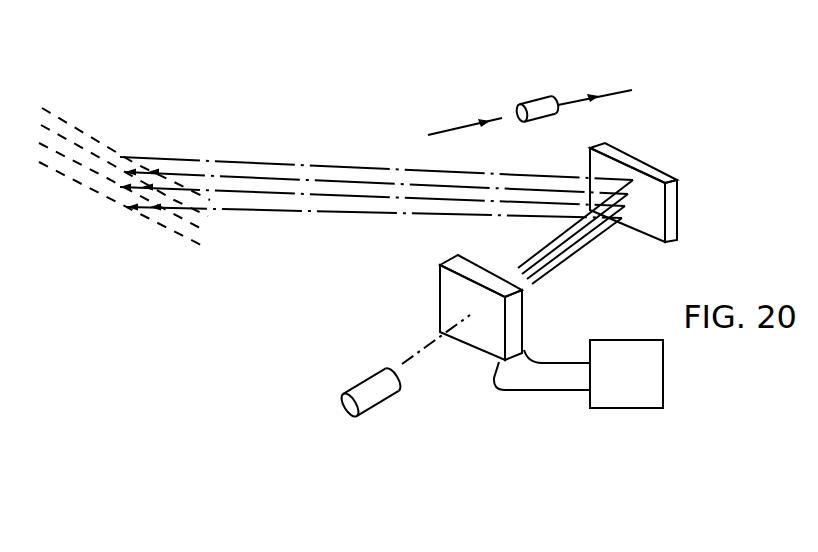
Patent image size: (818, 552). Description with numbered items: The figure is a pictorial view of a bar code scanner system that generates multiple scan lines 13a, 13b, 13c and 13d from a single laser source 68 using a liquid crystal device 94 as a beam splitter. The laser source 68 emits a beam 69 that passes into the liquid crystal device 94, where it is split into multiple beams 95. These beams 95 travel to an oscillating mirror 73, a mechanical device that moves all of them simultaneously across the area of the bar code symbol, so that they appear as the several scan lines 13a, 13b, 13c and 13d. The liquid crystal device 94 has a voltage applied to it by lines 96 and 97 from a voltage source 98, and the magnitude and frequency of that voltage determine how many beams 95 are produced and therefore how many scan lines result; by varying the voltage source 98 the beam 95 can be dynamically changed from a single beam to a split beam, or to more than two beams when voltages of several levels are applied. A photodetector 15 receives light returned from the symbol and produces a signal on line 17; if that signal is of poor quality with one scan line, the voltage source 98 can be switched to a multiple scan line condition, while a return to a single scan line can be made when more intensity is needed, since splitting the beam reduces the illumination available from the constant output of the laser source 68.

The scan line 13a is at (72, 124).
The scan line 13b is at (100, 157).
The scan line 13c is at (72, 164).
The scan line 13d is at (110, 200).
The photodetector 15 is at (543, 108).
The line 17 is at (570, 100).
The laser source 68 is at (380, 392).
The beam 69 is at (405, 362).
The oscillating mirror 73 is at (653, 172).
The liquid crystal device 94 is at (443, 295).
The beams 95 is at (614, 235).
The line 96 is at (568, 363).
The line 97 is at (560, 390).
The voltage source 98 is at (642, 390).